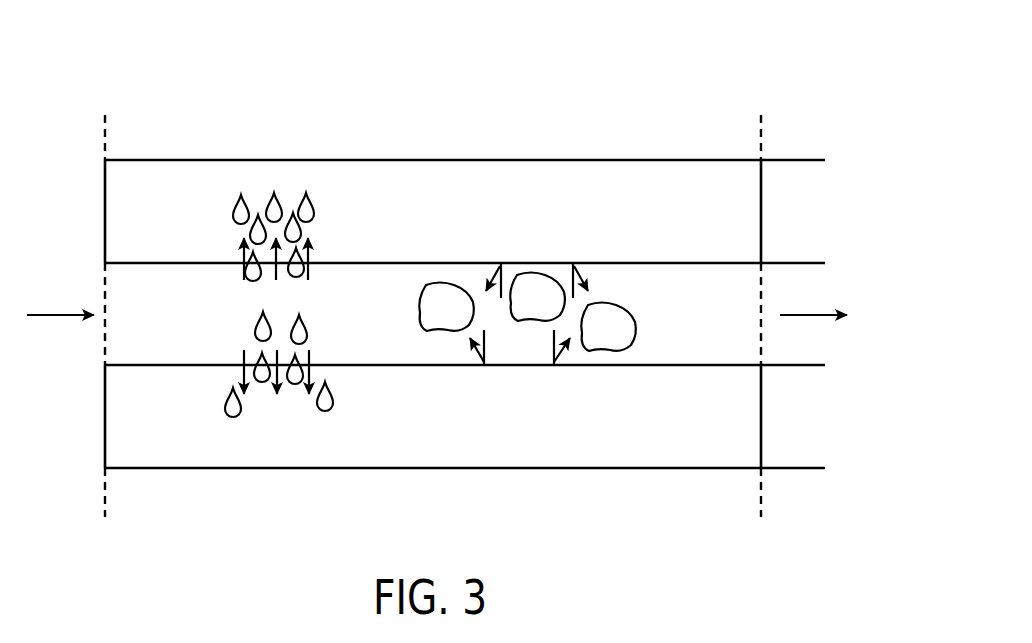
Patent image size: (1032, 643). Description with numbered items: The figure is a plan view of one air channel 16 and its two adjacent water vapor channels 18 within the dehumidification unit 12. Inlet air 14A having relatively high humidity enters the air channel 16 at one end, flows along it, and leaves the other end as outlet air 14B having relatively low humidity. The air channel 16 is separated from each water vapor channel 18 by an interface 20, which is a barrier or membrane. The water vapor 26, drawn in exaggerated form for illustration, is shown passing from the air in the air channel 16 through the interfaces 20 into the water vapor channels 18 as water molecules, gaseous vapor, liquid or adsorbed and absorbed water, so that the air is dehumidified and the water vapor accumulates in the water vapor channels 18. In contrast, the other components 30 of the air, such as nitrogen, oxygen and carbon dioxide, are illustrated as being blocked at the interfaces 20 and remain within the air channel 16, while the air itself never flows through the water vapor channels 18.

The dehumidification unit 12 is at (594, 75).
The inlet air 14A is at (68, 312).
The outlet air 14B is at (808, 314).
The air channel 16 is at (168, 327).
The water vapor channels 18 is at (168, 224).
The interface 20 is at (730, 264).
The water vapor 26 is at (330, 206).
The other components 30 is at (457, 320).